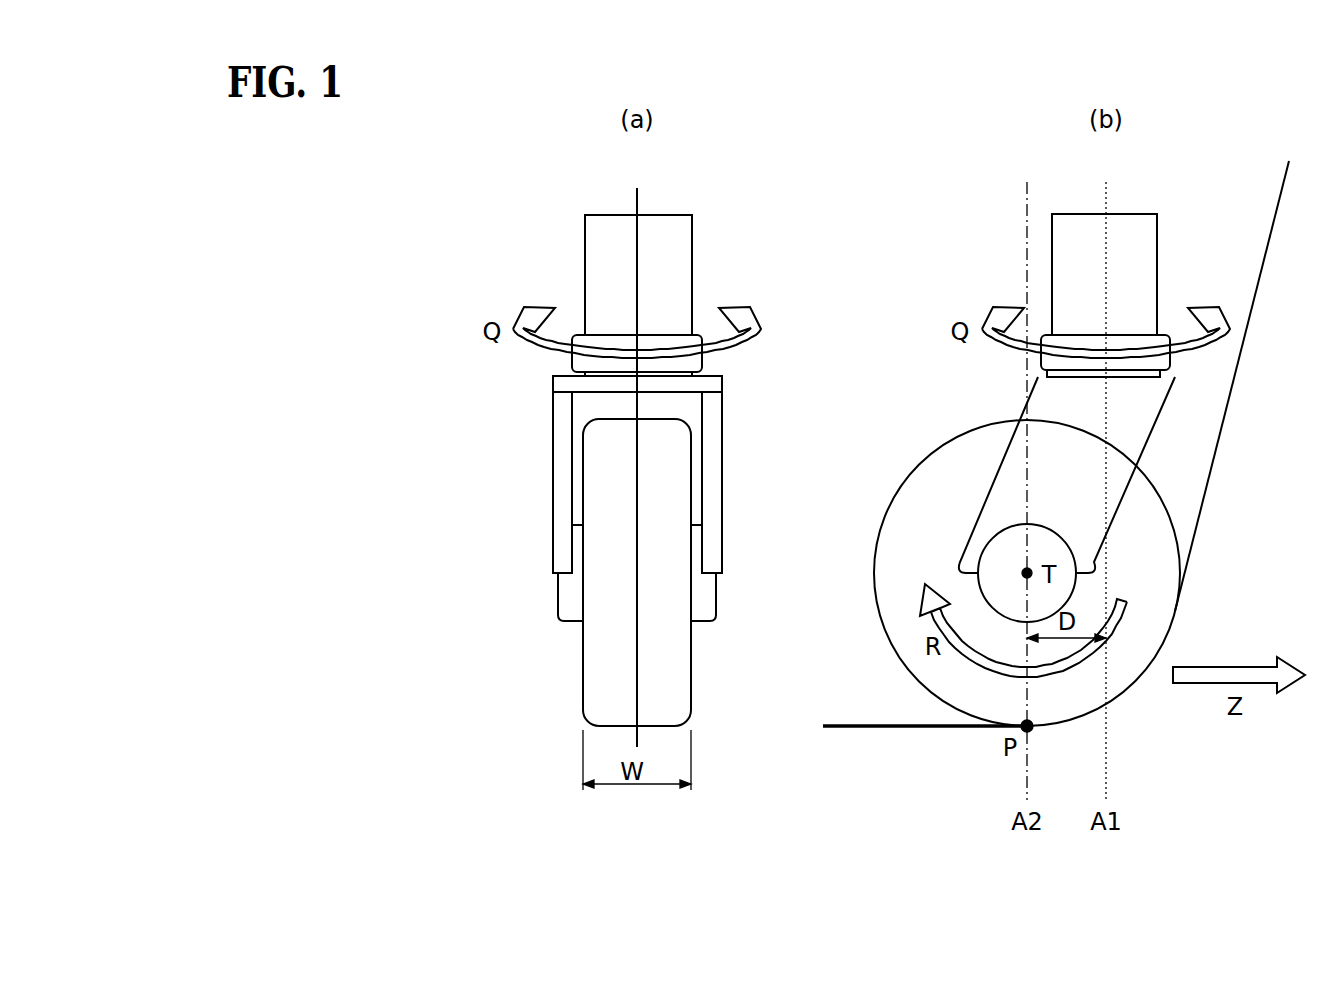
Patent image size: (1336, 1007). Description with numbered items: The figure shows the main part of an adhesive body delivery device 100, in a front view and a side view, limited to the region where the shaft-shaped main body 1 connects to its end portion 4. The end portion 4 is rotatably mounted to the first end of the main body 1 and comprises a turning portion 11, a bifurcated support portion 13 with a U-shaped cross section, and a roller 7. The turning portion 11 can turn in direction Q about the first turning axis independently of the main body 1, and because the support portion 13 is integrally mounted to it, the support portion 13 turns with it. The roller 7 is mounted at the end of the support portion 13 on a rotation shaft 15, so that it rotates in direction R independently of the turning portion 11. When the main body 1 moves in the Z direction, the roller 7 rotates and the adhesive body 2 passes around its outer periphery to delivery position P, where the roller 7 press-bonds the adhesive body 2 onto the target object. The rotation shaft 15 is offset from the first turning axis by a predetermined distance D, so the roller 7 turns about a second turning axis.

The adhesive body delivery device 100 is at (527, 222).
The main body 1 is at (680, 243).
The adhesive body 2 is at (634, 205).
The end portion 4 is at (510, 470).
The roller 7 is at (595, 690).
The turning portion 11 is at (672, 342).
The support portion 13 is at (560, 427).
The rotation shaft 15 is at (572, 600).